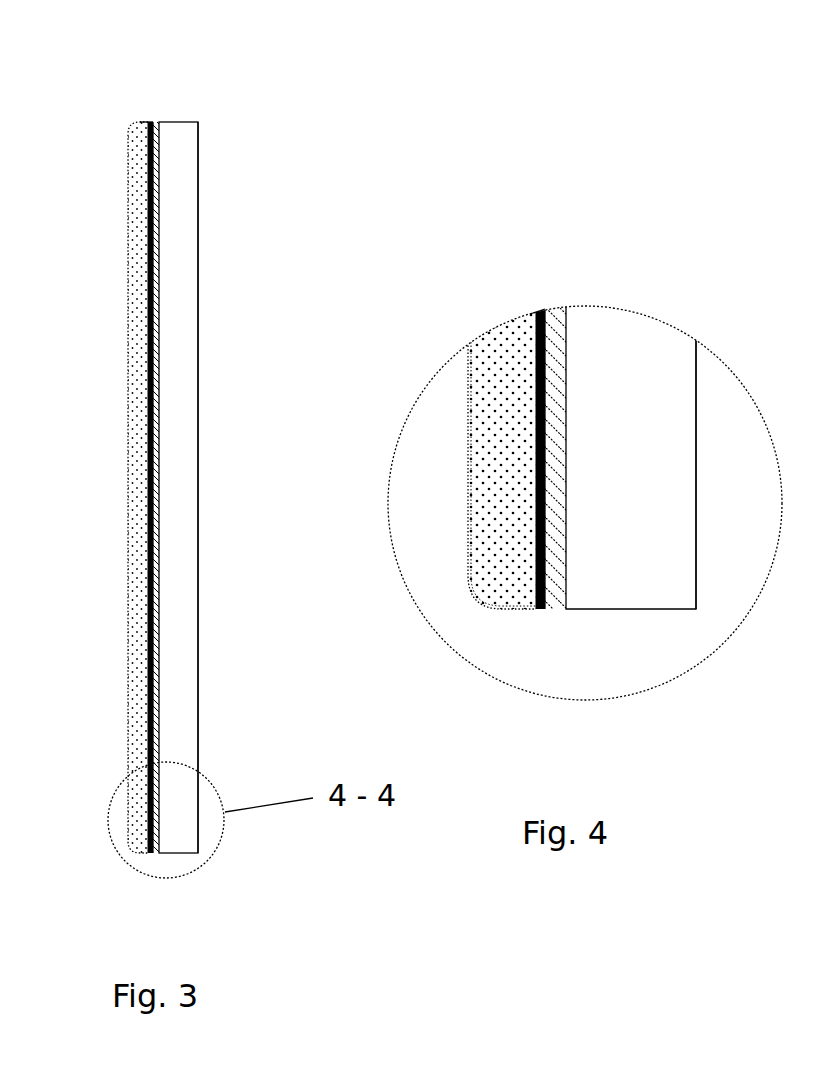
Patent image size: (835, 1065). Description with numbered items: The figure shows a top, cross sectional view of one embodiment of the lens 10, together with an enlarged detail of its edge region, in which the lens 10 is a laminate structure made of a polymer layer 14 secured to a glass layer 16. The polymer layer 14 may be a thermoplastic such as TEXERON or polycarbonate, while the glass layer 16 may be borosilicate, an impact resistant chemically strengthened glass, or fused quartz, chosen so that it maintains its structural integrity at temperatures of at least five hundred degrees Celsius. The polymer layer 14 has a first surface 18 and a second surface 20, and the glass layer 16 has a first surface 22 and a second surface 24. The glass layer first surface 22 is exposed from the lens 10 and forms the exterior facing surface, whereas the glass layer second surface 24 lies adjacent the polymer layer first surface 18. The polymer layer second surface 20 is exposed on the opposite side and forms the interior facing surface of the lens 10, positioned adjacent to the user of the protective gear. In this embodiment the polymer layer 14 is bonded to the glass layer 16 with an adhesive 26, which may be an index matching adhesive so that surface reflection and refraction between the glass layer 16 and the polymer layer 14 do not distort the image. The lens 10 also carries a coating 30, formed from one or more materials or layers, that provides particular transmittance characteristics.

In FIG. 3, the lens 10 is at (192, 84).
In FIG. 3, the polymer layer 14 is at (200, 350).
In FIG. 4, the polymer layer 14 is at (638, 325).
In FIG. 3, the glass layer 16 is at (130, 290).
In FIG. 4, the glass layer 16 is at (503, 330).
In FIG. 3, the polymer layer first surface 18 is at (146, 698).
In FIG. 4, the polymer layer first surface 18 is at (546, 464).
In FIG. 3, the polymer layer second surface 20 is at (200, 592).
In FIG. 4, the polymer layer second surface 20 is at (697, 540).
In FIG. 3, the glass layer first surface 22 is at (128, 435).
In FIG. 4, the glass layer first surface 22 is at (468, 418).
In FIG. 3, the glass layer second surface 24 is at (150, 540).
In FIG. 4, the glass layer second surface 24 is at (543, 536).
In FIG. 3, the adhesive 26 is at (153, 122).
In FIG. 4, the adhesive 26 is at (550, 310).
In FIG. 3, the coating 30 is at (148, 122).
In FIG. 4, the coating 30 is at (538, 312).